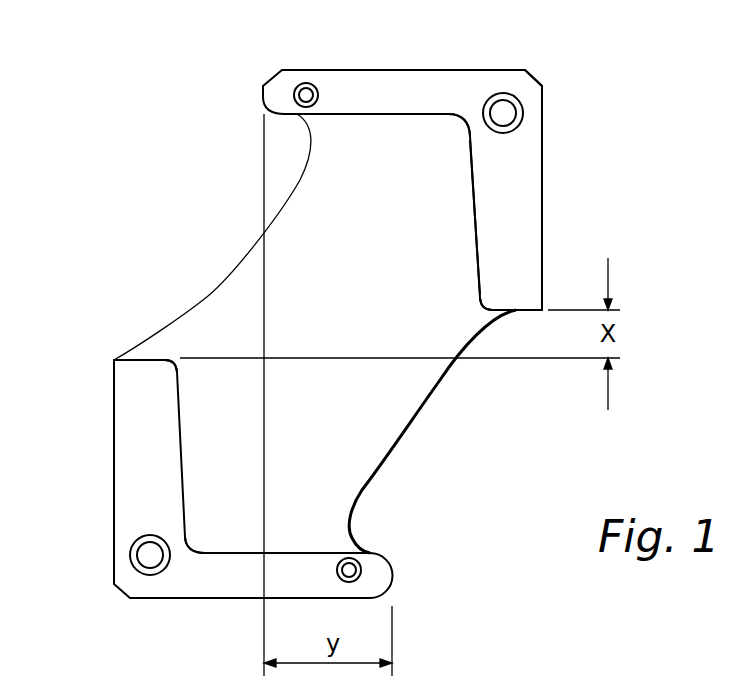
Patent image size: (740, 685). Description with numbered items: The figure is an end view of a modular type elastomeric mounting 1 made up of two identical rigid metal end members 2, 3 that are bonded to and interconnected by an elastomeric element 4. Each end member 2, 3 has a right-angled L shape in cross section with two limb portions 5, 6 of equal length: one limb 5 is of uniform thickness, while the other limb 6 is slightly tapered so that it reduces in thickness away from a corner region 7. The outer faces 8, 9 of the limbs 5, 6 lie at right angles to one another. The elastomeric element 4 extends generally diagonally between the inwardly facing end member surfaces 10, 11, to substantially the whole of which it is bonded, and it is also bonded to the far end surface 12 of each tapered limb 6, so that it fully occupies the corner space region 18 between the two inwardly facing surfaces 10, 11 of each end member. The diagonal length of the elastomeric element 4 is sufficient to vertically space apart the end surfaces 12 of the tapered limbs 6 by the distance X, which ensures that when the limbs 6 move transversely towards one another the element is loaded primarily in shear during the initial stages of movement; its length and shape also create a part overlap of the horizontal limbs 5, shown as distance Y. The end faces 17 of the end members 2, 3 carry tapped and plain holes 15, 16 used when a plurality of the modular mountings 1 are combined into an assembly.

The modular type elastomeric mounting 1 is at (272, 78).
The end member 2 is at (337, 78).
The end member 3 is at (207, 577).
The elastomeric element 4 is at (331, 326).
The limb portion 5 is at (399, 78).
The limb portion 6 is at (525, 200).
The corner region 7 is at (544, 95).
The outer face 8 is at (448, 68).
The outer face 9 is at (544, 152).
The inwardly facing end member surface 10 is at (373, 116).
The inwardly facing end member surface 11 is at (472, 216).
The far end surface 12 is at (508, 308).
The tapped hole 15 is at (503, 94).
The plain hole 16 is at (305, 83).
The end face 17 is at (497, 264).
The corner space region 18 is at (430, 153).